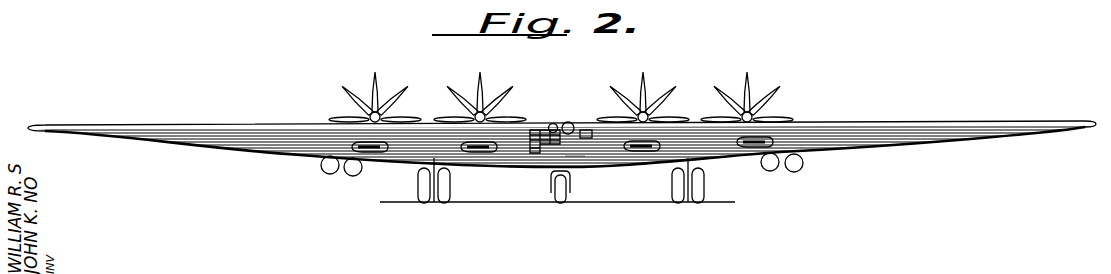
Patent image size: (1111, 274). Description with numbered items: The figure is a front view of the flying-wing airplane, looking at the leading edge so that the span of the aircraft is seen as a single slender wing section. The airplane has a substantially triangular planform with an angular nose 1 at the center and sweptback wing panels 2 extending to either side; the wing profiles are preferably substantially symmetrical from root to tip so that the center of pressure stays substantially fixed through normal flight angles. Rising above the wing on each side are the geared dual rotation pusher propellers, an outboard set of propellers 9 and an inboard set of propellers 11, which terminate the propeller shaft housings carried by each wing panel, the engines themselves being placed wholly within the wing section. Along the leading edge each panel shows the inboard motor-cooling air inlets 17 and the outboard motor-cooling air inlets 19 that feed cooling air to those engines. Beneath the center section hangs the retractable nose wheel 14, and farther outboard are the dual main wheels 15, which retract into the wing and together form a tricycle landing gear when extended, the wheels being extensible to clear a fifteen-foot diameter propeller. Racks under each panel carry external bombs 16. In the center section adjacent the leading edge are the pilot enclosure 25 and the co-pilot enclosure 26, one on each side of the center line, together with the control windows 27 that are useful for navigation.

The angular nose 1 is at (565, 156).
The sweptback wing panels 2 is at (180, 124).
The outboard pusher propellers 9 is at (373, 89).
The inboard pusher propellers 11 is at (490, 88).
The retractable nose wheel 14 is at (561, 203).
The dual main wheels 15 is at (435, 205).
The external bombs 16 is at (348, 176).
The inboard motor-cooling air inlets 17 is at (458, 147).
The outboard motor-cooling air inlets 19 is at (353, 144).
The pilot enclosure 25 is at (569, 121).
The co-pilot enclosure 26 is at (553, 123).
The control windows 27 is at (538, 152).